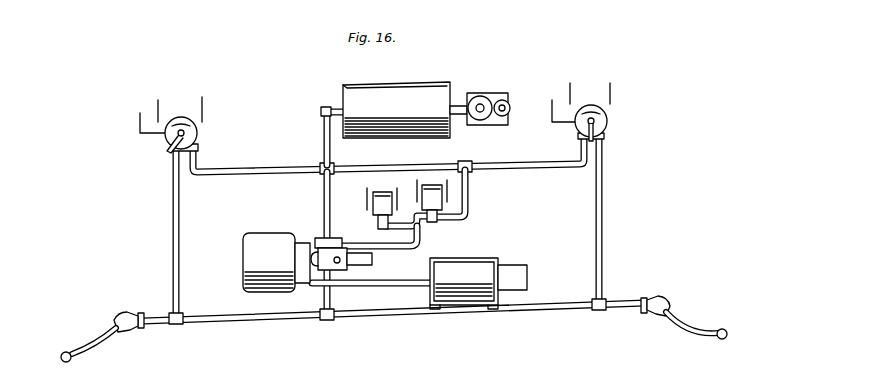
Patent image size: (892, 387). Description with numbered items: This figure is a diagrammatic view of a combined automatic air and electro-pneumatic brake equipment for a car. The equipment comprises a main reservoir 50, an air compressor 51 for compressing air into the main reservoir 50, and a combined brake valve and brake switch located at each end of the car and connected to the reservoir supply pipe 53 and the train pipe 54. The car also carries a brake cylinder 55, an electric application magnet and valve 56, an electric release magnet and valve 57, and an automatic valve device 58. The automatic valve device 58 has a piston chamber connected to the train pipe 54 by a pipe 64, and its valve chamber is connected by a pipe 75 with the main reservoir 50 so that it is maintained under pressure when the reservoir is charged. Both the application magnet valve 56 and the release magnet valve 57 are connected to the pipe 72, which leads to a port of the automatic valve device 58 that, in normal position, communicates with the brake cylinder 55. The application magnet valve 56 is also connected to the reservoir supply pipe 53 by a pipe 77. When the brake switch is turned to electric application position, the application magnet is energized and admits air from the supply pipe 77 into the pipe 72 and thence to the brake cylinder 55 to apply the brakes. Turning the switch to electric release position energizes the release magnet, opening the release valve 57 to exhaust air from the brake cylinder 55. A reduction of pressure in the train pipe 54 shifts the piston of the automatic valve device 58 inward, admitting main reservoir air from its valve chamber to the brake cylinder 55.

The main reservoir 50 is at (427, 83).
The air compressor 51 is at (482, 95).
The reservoir supply pipe 53 is at (280, 165).
The train pipe 54 is at (209, 313).
The brake cylinder 55 is at (479, 258).
The electric application magnet and valve 56 is at (442, 200).
The electric release magnet and valve 57 is at (373, 203).
The automatic valve device 58 is at (347, 262).
The pipe 64 is at (331, 298).
The pipe 72 is at (418, 243).
The pipe 75 is at (324, 214).
The pipe 77 is at (468, 214).